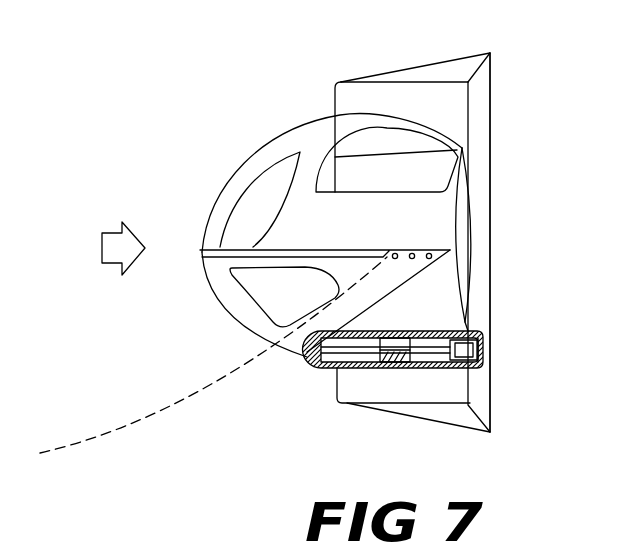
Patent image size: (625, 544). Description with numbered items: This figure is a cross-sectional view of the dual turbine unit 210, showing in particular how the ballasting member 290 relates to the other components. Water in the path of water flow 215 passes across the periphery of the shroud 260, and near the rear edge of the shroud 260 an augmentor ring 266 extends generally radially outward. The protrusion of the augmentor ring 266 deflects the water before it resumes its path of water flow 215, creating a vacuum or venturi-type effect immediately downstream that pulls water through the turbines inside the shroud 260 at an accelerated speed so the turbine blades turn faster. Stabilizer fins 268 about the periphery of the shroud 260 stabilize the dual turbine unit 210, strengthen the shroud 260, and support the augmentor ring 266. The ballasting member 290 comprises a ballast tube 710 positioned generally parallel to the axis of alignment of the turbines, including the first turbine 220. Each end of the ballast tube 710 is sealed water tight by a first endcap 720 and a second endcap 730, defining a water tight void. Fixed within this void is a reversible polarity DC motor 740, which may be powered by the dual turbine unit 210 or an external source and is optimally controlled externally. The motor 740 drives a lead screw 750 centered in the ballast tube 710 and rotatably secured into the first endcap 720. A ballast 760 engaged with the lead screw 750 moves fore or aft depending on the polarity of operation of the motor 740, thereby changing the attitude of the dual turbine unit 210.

The dual turbine unit 210 is at (190, 110).
The path of water flow 215 is at (113, 238).
The first turbine 220 is at (365, 57).
The shroud 260 is at (377, 143).
The augmentor ring 266 is at (480, 113).
The stabilizer fins 268 is at (433, 75).
The ballasting member 290 is at (307, 383).
The ballast tube 710 is at (352, 372).
The first endcap 720 is at (293, 365).
The second endcap 730 is at (489, 342).
The DC motor 740 is at (470, 365).
The lead screw 750 is at (362, 352).
The ballast 760 is at (394, 355).